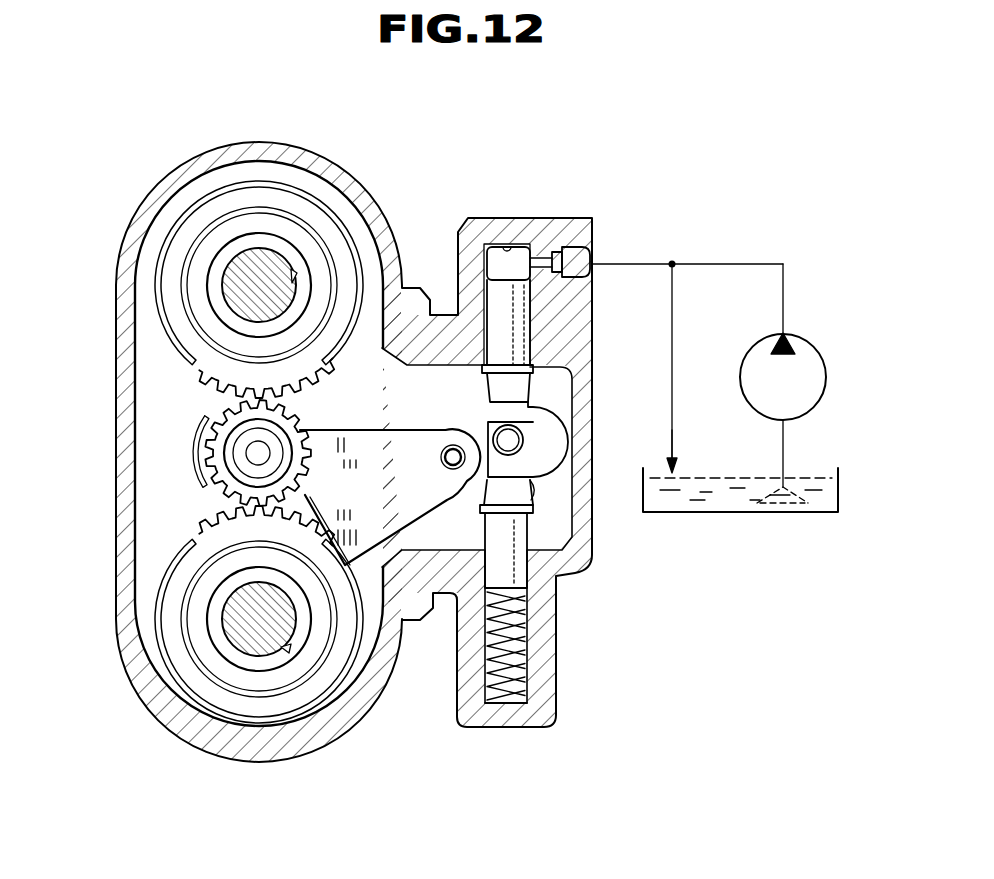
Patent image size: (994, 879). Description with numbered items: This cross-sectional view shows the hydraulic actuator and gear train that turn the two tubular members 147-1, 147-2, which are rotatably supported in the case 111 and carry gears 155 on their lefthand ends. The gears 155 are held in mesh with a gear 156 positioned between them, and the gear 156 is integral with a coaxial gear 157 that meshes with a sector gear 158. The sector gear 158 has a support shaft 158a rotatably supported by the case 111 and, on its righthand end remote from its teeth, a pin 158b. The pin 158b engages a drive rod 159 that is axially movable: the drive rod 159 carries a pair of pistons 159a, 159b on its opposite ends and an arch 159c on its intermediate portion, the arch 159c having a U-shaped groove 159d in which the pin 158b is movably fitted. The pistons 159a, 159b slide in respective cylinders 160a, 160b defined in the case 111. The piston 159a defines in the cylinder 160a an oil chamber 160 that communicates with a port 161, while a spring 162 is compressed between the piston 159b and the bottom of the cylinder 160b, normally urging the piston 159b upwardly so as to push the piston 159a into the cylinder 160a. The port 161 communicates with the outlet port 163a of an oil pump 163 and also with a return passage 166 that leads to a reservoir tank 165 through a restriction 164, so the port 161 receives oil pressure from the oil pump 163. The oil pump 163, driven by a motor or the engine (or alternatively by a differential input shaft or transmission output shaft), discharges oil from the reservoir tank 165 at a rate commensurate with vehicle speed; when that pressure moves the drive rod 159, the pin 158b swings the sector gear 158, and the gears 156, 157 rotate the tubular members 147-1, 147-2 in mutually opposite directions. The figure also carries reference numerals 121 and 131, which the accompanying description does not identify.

The case 111 is at (128, 427).
The drive shaft 121 is at (257, 258).
The driven shaft 131 is at (236, 641).
The tubular member 147-1 is at (283, 195).
The tubular member 147-2 is at (258, 705).
The gear 155 is at (337, 237).
The gear 156 is at (210, 467).
The coaxial gear 157 is at (240, 476).
The sector gear 158 is at (368, 440).
The support shaft 158a is at (453, 470).
The pin 158b is at (567, 379).
The drive rod 159 is at (517, 493).
The piston 159a is at (493, 310).
The piston 159b is at (520, 570).
The arch 159c is at (533, 462).
The U-shaped groove 159d is at (516, 439).
The oil chamber 160 is at (507, 250).
The cylinder 160a is at (523, 330).
The cylinder 160b is at (520, 668).
The port 161 is at (578, 262).
The spring 162 is at (515, 720).
The oil pump 163 is at (815, 368).
The outlet port 163a is at (786, 332).
The restriction 164 is at (688, 397).
The reservoir tank 165 is at (838, 484).
The return passage 166 is at (676, 436).